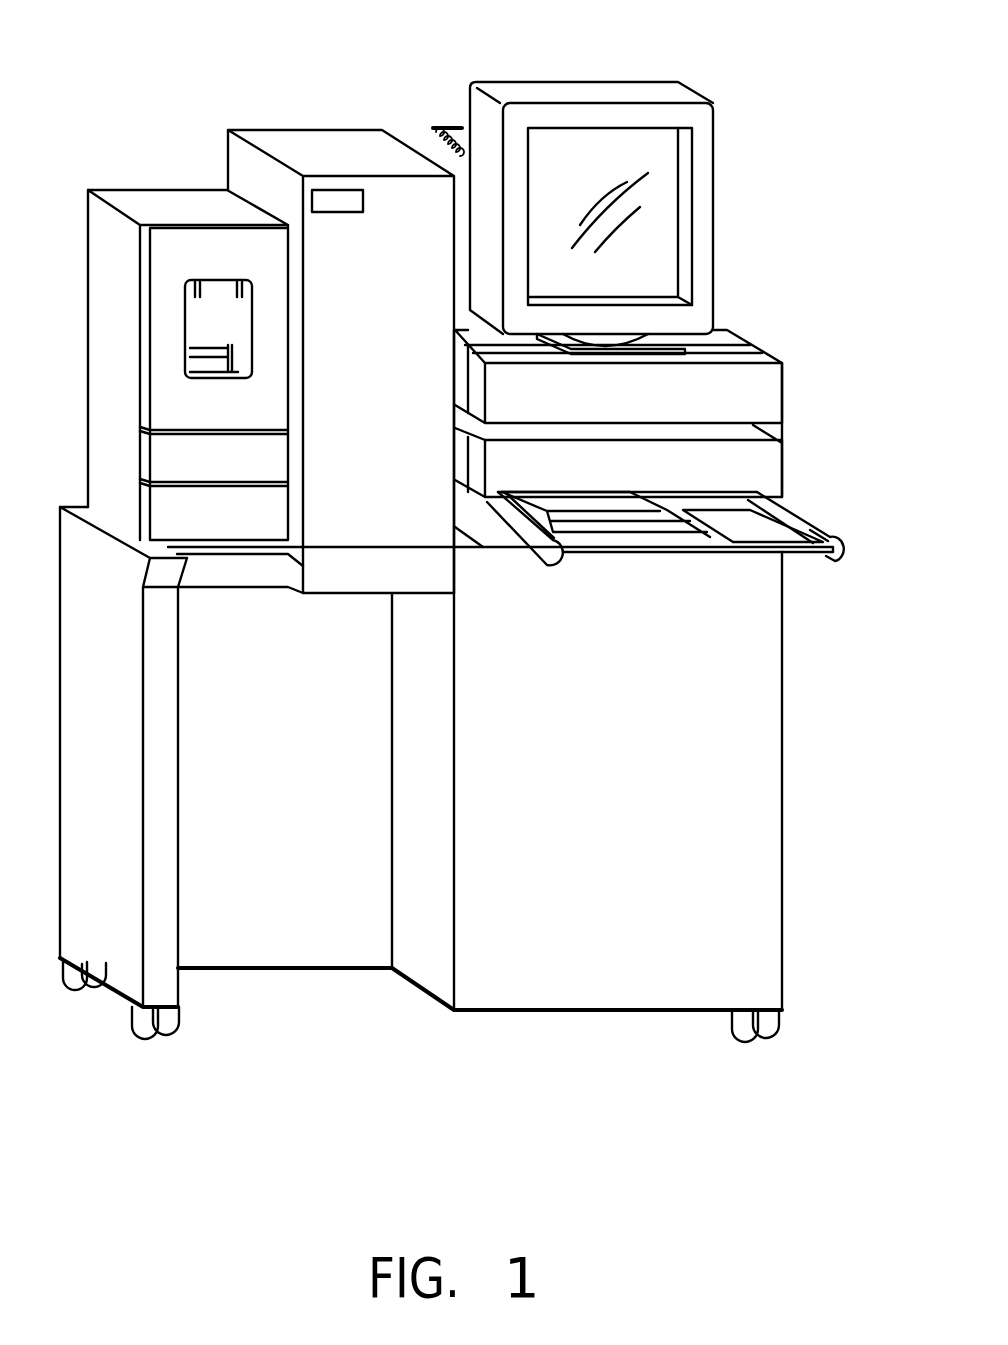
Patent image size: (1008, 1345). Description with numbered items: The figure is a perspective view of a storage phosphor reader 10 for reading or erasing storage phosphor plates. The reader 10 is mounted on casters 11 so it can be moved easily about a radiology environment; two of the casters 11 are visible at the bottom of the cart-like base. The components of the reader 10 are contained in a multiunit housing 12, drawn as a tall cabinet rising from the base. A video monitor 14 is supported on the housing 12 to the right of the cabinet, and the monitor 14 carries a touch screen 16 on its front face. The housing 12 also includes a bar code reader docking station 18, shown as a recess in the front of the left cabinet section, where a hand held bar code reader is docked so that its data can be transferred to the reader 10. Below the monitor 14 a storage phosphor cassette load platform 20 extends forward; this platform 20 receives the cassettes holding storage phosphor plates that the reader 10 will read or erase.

The storage phosphor reader 10 is at (371, 98).
The casters 11 is at (153, 1042).
The multiunit housing 12 is at (283, 128).
The video monitor 14 is at (632, 80).
The touch screen 16 is at (668, 233).
The bar code reader docking station 18 is at (200, 320).
The storage phosphor cassette load platform 20 is at (828, 522).